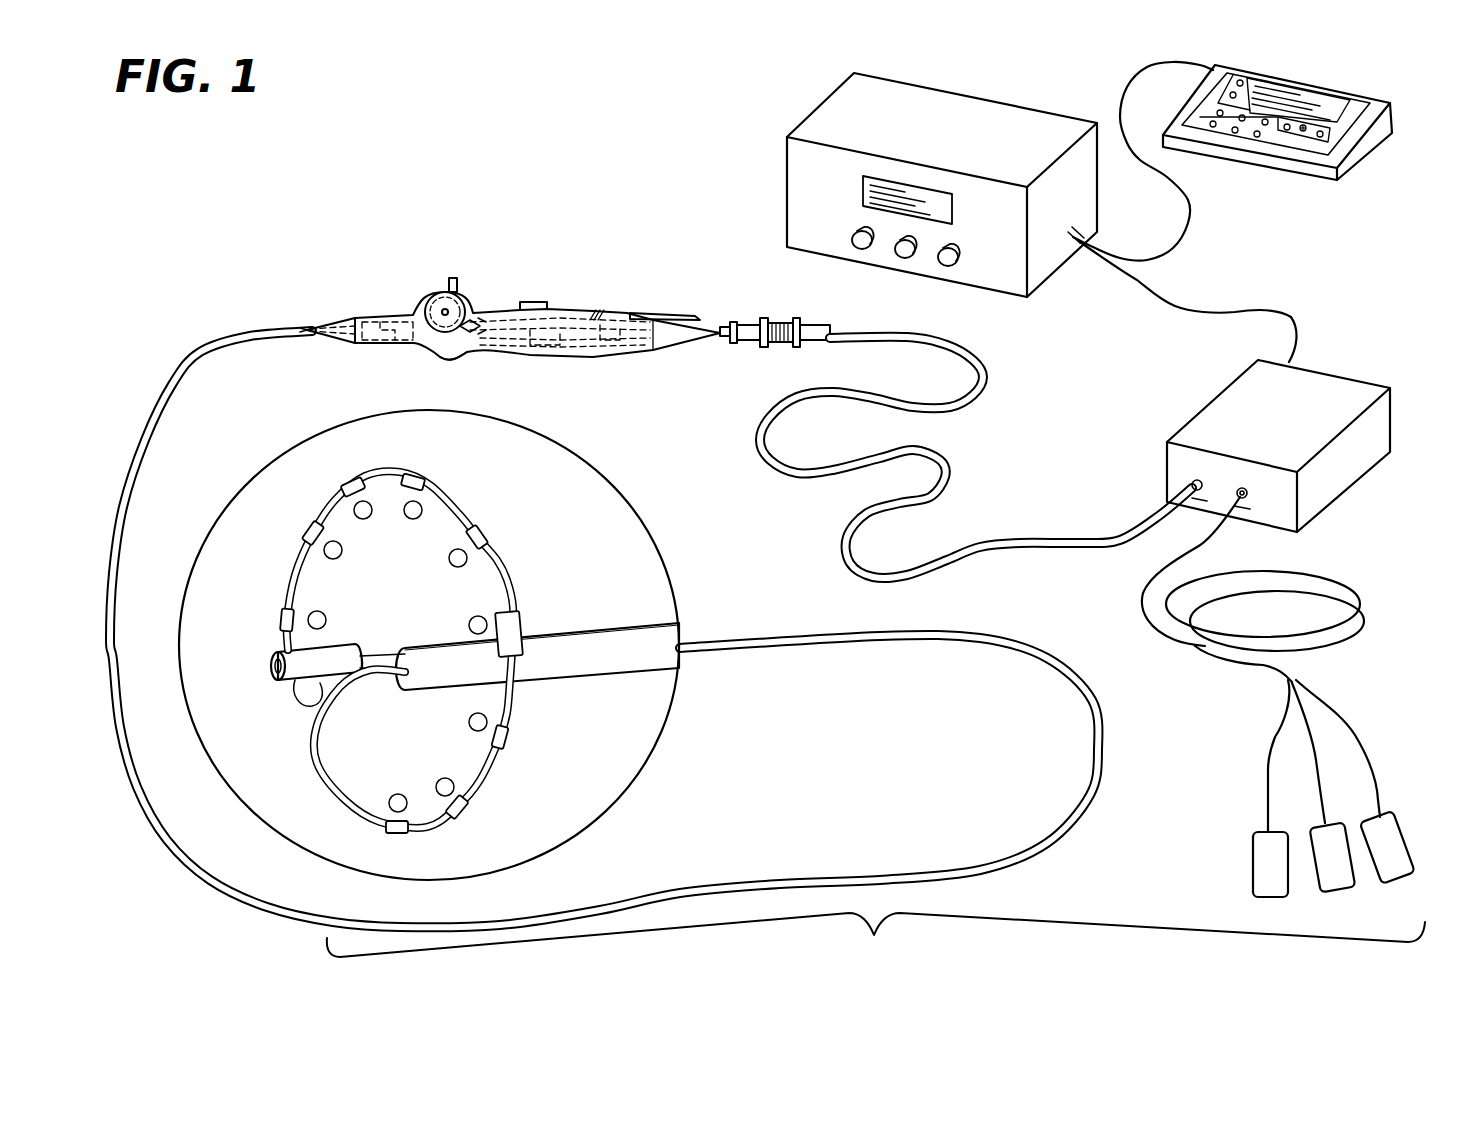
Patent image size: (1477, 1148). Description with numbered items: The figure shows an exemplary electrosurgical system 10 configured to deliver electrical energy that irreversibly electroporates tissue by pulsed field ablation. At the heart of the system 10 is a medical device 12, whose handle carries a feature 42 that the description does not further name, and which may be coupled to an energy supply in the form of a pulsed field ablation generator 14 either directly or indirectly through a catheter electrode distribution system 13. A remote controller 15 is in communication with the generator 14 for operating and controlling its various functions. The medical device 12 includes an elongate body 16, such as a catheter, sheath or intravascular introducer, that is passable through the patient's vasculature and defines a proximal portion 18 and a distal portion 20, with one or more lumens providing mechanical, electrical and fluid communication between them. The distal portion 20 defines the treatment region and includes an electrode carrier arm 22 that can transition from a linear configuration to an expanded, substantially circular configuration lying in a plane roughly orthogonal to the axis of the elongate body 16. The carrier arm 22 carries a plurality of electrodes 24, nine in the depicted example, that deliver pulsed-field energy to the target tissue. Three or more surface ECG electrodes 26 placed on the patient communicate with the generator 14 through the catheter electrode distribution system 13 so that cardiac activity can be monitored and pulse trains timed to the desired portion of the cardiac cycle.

The system 10 is at (876, 948).
The medical device 12 is at (521, 305).
The catheter electrode distribution system 13 is at (1352, 385).
The pulsed field ablation generator 14 is at (786, 107).
The remote controller 15 is at (1321, 182).
The elongate body 16 is at (170, 381).
The proximal portion 18 is at (286, 302).
The distal portion 20 is at (636, 487).
The electrode carrier arm 22 is at (431, 831).
The electrodes 24 is at (286, 618).
The surface ECG electrodes 26 is at (1270, 860).
The handle grip 42 is at (457, 362).